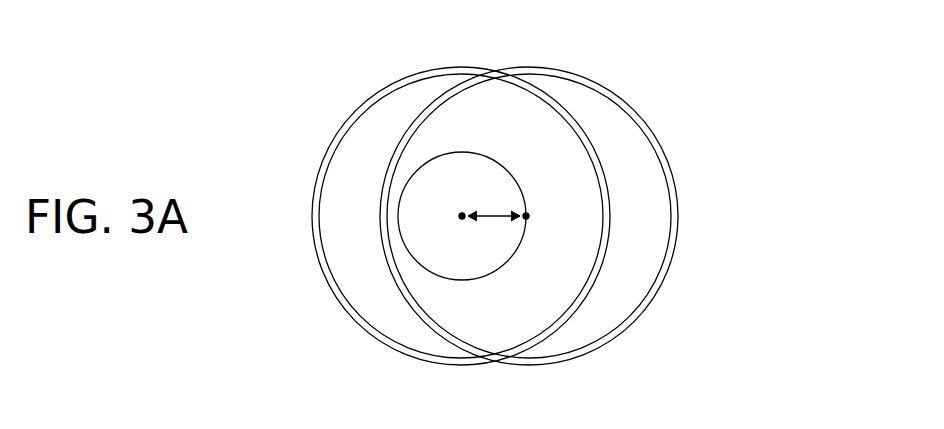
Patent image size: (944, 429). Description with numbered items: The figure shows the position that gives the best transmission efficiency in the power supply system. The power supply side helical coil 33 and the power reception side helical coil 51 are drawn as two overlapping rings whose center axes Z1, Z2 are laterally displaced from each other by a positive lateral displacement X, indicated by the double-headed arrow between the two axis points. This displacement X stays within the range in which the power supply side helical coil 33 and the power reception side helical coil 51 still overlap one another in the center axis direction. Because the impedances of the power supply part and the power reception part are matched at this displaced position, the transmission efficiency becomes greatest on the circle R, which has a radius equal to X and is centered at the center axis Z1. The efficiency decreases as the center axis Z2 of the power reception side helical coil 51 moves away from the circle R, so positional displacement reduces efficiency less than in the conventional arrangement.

The power supply side helical coil 33 is at (362, 328).
The power reception side helical coil 51 is at (675, 247).
The circle R is at (413, 168).
The center axis Z1 is at (460, 215).
The center axis Z2 is at (530, 216).
The lateral displacement X is at (495, 216).